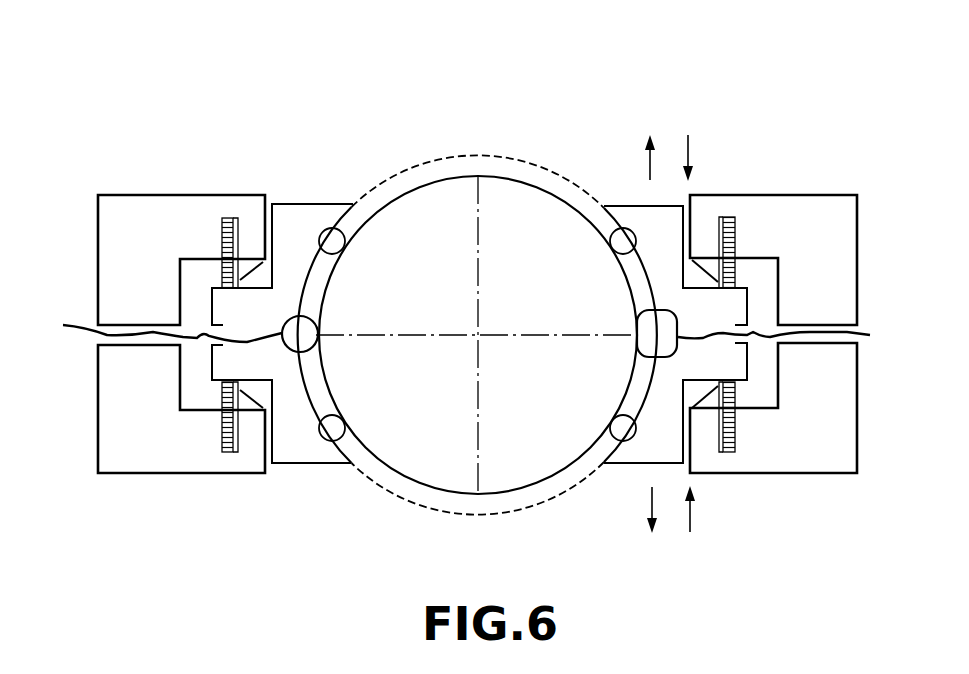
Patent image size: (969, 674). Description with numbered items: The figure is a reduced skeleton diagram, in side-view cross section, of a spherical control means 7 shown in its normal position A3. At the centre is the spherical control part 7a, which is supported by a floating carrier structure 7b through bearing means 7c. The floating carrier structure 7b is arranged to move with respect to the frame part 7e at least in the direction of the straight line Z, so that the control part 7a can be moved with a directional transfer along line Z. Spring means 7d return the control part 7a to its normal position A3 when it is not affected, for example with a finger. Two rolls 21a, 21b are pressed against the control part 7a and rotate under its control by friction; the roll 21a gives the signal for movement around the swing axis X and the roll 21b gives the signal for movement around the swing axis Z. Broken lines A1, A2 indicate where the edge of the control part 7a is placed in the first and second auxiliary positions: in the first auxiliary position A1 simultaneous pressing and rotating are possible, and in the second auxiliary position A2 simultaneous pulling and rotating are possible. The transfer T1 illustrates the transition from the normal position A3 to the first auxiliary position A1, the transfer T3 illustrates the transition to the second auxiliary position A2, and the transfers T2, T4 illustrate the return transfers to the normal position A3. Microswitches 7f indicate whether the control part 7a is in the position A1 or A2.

The control means 7 is at (438, 66).
The control part 7a is at (430, 180).
The floating carrier structure 7b is at (303, 206).
The bearing means 7c is at (670, 230).
The spring means 7d is at (223, 243).
The frame part 7e is at (162, 463).
The microswitches 7f is at (250, 260).
The roll 21a is at (298, 343).
The roll 21b is at (668, 349).
The first auxiliary position A1 is at (460, 157).
The second auxiliary position A2 is at (480, 515).
The normal position A3 is at (408, 478).
The swing axis X is at (538, 333).
The swing axis Z is at (480, 200).
The transfer T1 is at (650, 170).
The transfer T2 is at (688, 150).
The transfer T3 is at (652, 500).
The transfer T4 is at (690, 520).